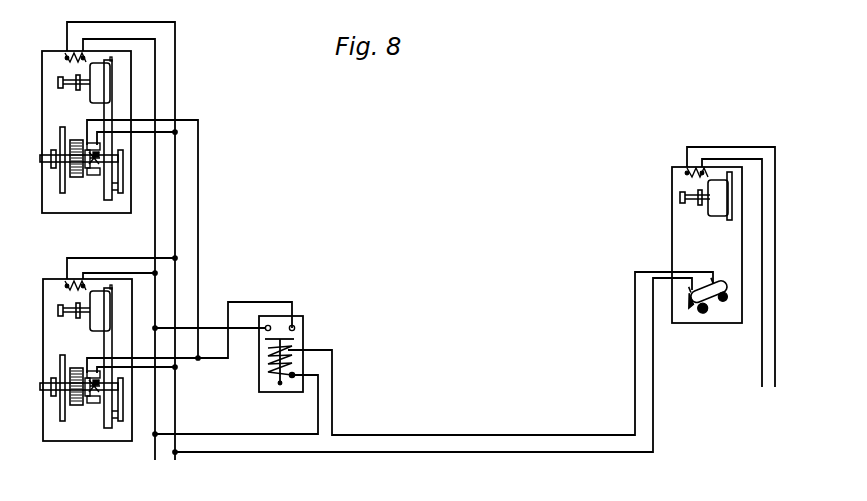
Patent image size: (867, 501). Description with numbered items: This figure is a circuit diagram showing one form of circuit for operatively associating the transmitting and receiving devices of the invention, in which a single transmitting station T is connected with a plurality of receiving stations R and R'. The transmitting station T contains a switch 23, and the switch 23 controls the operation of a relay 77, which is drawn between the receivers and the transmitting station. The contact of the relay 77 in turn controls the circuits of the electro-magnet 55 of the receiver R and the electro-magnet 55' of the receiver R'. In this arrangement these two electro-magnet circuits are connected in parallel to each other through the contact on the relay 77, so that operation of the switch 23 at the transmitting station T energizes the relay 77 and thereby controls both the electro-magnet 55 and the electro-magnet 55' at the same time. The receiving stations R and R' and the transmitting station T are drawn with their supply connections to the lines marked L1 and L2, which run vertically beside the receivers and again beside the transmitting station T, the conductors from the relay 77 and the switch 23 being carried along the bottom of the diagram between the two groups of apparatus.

The receiving station R is at (130, 204).
The receiving station R' is at (166, 367).
The electro-magnet 55 is at (88, 188).
The electro-magnet 55' is at (90, 419).
The relay 77 is at (290, 349).
The transmitting station T is at (682, 232).
The switch 23 is at (711, 297).
The supply line L1 is at (432, 260).
The supply line L2 is at (416, 251).